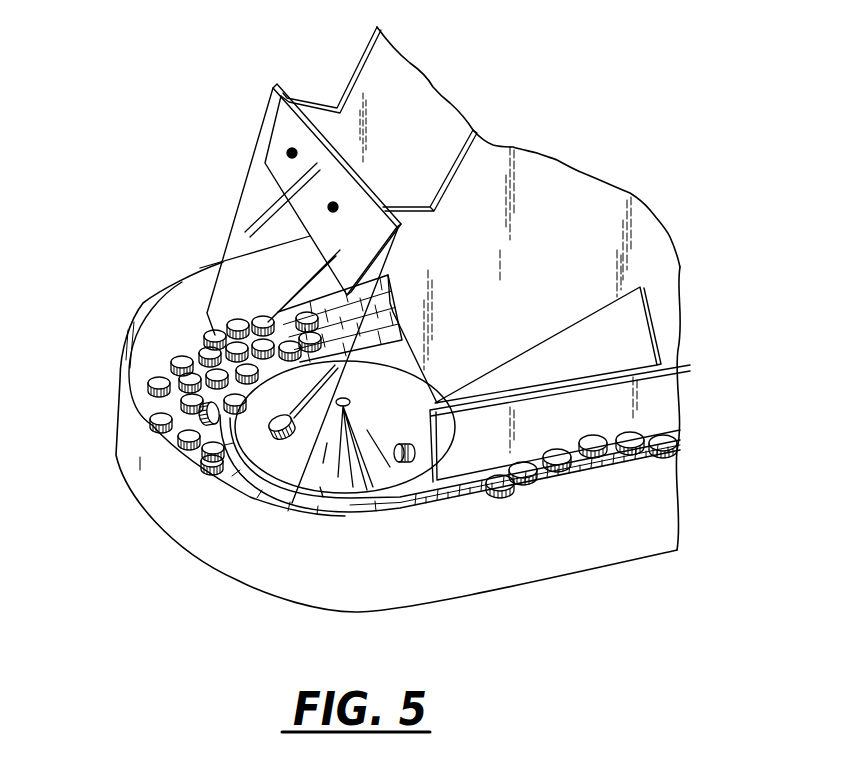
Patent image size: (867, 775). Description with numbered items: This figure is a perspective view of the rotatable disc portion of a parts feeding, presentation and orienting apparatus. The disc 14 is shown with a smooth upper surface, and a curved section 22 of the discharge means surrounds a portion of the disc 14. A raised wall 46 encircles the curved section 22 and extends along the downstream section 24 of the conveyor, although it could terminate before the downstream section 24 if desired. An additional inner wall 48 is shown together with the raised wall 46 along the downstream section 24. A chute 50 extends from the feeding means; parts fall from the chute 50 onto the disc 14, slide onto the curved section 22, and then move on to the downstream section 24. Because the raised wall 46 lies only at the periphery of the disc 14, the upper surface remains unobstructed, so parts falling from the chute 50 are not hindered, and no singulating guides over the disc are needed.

The disc 14 is at (322, 490).
The curved section 22 is at (137, 407).
The downstream section 24 is at (480, 493).
The raised wall 46 is at (177, 532).
The inner wall 48 is at (647, 403).
The chute 50 is at (567, 183).